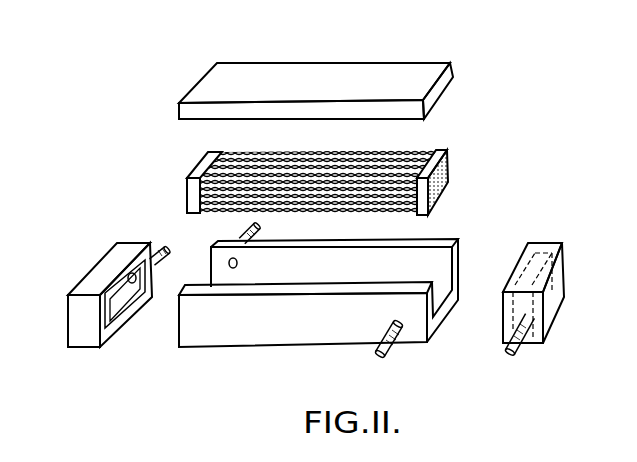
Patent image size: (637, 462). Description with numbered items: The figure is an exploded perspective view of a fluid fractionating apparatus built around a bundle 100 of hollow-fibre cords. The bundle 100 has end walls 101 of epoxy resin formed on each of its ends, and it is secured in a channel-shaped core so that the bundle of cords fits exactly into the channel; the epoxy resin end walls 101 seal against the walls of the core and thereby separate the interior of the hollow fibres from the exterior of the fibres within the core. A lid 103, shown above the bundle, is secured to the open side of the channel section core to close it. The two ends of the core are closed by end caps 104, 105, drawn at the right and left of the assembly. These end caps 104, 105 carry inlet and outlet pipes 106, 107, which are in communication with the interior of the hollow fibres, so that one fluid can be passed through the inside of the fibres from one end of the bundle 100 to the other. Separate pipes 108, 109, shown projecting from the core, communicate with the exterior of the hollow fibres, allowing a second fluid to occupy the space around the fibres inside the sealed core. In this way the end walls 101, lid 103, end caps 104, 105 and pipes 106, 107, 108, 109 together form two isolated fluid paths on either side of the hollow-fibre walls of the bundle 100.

The bundle 100 is at (323, 165).
The end walls 101 is at (203, 168).
The lid 103 is at (418, 70).
The end cap 104 is at (553, 310).
The end cap 105 is at (82, 318).
The inlet pipe 106 is at (517, 353).
The outlet pipe 107 is at (162, 245).
The pipe 108 is at (387, 348).
The pipe 109 is at (260, 228).